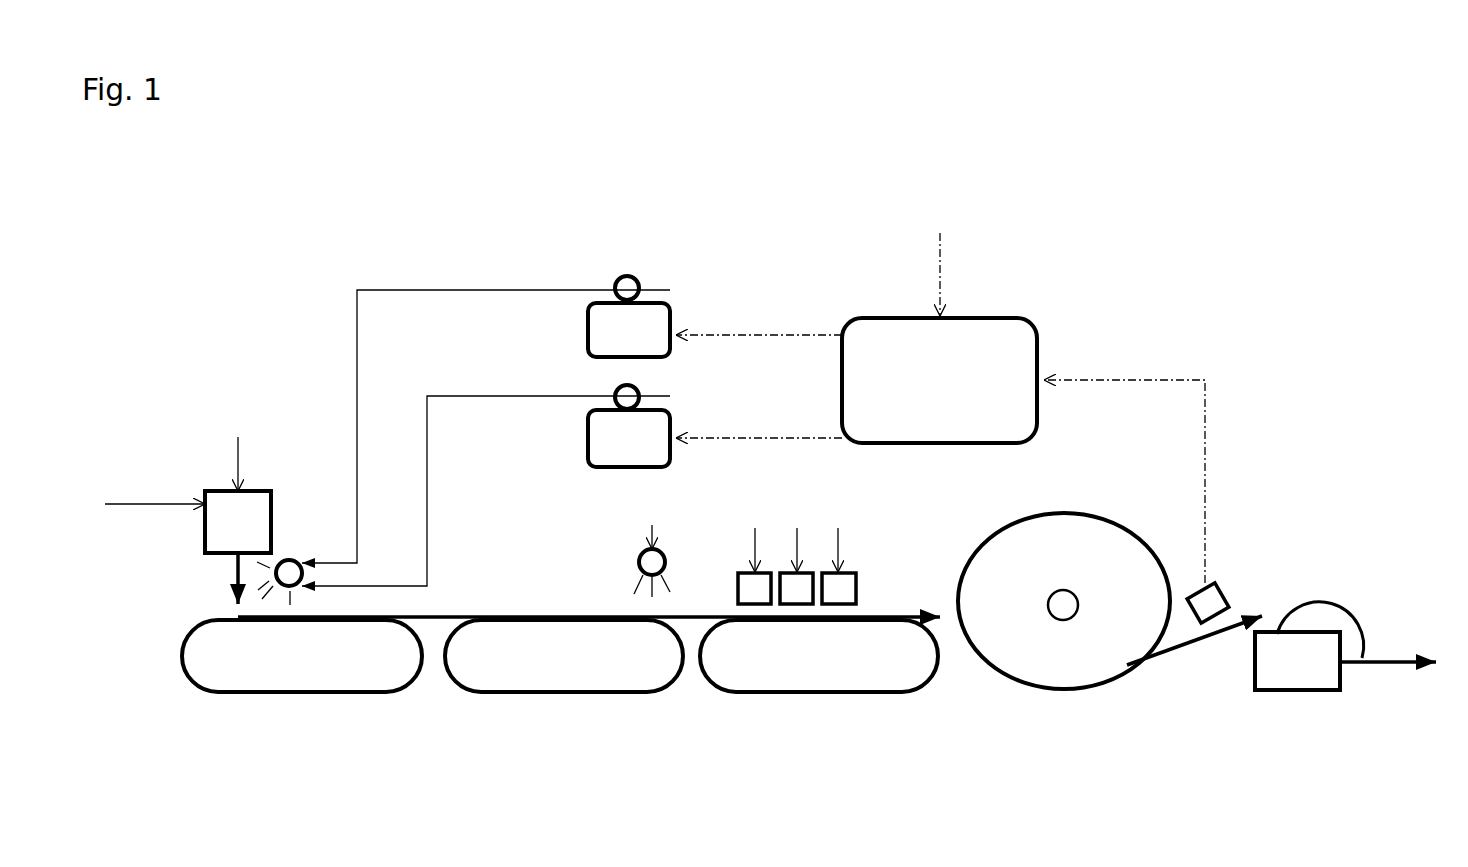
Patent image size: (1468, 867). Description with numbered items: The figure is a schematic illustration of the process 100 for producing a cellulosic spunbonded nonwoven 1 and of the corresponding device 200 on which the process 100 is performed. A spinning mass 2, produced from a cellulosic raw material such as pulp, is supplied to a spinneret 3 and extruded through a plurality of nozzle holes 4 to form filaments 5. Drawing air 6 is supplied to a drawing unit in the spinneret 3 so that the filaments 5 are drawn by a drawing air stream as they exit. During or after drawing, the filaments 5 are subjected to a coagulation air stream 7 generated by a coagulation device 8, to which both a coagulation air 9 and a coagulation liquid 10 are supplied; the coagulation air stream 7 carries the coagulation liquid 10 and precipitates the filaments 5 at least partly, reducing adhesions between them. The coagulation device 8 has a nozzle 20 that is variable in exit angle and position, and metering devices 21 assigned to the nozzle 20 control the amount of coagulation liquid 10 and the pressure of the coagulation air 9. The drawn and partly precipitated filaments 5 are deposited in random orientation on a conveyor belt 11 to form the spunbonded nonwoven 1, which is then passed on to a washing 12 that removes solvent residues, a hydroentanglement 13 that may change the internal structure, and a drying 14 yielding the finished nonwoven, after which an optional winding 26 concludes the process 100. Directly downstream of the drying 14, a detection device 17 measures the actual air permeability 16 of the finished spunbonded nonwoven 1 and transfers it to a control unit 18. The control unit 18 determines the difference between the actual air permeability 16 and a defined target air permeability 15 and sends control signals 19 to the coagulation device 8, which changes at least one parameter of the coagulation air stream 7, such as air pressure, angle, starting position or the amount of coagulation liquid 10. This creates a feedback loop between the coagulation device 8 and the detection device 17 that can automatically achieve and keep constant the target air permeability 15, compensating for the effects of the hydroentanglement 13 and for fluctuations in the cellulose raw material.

The cellulosic spunbonded nonwoven 1 is at (497, 615).
The spinning mass 2 is at (122, 505).
The spinneret 3 is at (232, 525).
The nozzle holes 4 is at (222, 564).
The filaments 5 is at (212, 587).
The drawing air 6 is at (238, 460).
The coagulation air stream 7 is at (270, 562).
The coagulation device 8 is at (315, 548).
The coagulation air 9 is at (473, 396).
The coagulation liquid 10 is at (447, 290).
The conveyor belt 11 is at (297, 660).
The washing 12 is at (634, 552).
The hydroentanglement 13 is at (862, 548).
The drying 14 is at (1034, 700).
The target air permeability 15 is at (942, 268).
The actual air permeability 16 is at (1207, 430).
The detection device 17 is at (1236, 582).
The control unit 18 is at (939, 380).
The control signals 19 is at (800, 438).
The nozzle 20 is at (305, 576).
The metering devices 21 is at (629, 371).
The winding 26 is at (1306, 706).
The process 100 is at (1242, 121).
The device 200 is at (1300, 191).